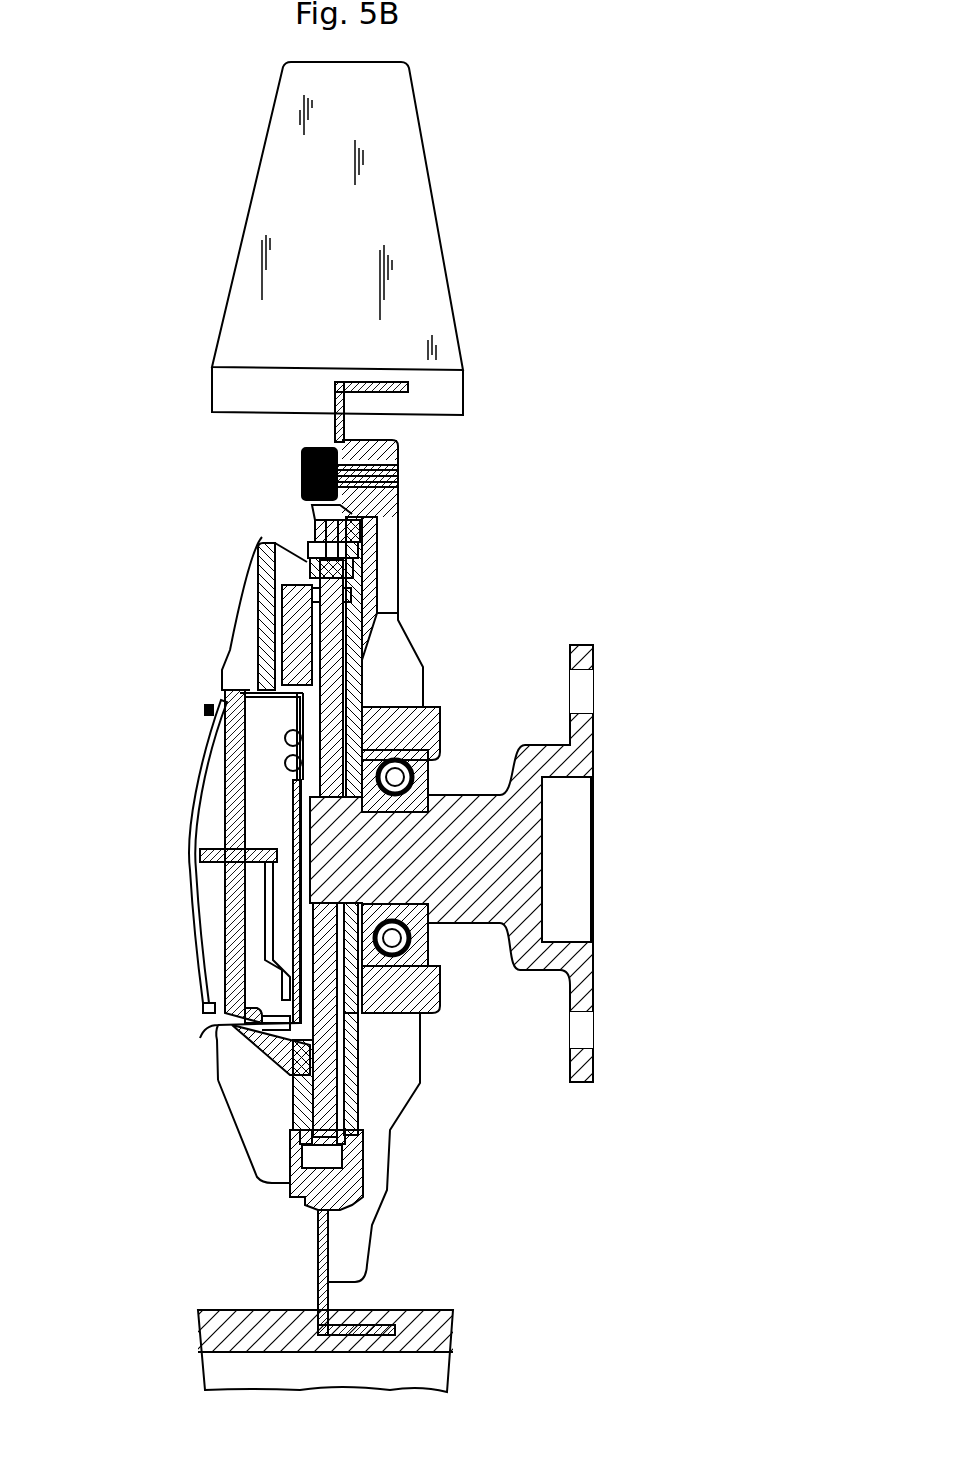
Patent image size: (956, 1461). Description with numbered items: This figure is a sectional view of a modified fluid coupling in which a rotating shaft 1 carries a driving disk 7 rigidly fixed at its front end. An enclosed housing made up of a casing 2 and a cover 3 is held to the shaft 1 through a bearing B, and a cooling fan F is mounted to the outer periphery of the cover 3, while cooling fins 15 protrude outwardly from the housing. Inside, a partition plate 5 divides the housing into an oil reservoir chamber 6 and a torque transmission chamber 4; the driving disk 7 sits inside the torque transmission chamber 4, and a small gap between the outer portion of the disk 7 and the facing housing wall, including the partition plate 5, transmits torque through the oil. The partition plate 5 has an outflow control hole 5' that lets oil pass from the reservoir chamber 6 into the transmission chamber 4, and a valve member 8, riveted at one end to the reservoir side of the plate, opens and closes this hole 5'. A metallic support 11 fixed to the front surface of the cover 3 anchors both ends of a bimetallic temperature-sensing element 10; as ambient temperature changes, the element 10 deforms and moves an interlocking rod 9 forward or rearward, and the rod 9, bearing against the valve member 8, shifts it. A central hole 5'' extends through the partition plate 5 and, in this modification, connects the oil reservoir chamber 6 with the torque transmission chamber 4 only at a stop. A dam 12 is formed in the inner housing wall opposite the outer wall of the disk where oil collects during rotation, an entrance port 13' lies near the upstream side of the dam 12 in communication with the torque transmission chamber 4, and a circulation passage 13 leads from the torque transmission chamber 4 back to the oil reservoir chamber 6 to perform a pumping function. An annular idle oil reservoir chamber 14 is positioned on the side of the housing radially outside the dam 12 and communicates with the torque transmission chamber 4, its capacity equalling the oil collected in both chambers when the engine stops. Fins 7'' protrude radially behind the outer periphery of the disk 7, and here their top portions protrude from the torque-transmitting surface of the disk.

The rotating shaft 1 is at (573, 838).
The casing 2 is at (420, 720).
The cover 3 is at (230, 1032).
The torque transmission chamber 4 is at (367, 668).
The partition plate 5 is at (205, 843).
The outflow control hole 5' is at (215, 981).
The hole 5'' is at (220, 858).
The oil reservoir chamber 6 is at (257, 737).
The driving disk 7 is at (385, 828).
The fins 7'' is at (322, 869).
The valve member 8 is at (273, 930).
The interlocking rod 9 is at (203, 857).
The temperature-sensing element 10 is at (197, 772).
The metallic support 11 is at (227, 885).
The dam 12 is at (370, 573).
The circulation passage 13 is at (240, 613).
The entrance port 13' is at (279, 839).
The annular idle oil reservoir chamber 14 is at (317, 552).
The cooling fins 15 is at (390, 523).
The bearing B is at (410, 775).
The cooling fan F is at (418, 215).